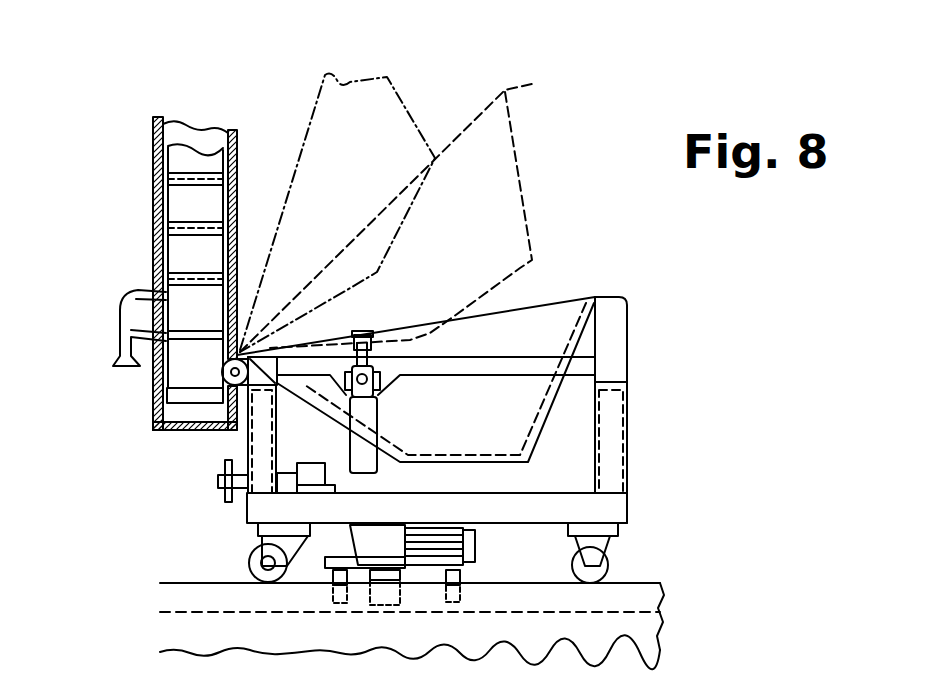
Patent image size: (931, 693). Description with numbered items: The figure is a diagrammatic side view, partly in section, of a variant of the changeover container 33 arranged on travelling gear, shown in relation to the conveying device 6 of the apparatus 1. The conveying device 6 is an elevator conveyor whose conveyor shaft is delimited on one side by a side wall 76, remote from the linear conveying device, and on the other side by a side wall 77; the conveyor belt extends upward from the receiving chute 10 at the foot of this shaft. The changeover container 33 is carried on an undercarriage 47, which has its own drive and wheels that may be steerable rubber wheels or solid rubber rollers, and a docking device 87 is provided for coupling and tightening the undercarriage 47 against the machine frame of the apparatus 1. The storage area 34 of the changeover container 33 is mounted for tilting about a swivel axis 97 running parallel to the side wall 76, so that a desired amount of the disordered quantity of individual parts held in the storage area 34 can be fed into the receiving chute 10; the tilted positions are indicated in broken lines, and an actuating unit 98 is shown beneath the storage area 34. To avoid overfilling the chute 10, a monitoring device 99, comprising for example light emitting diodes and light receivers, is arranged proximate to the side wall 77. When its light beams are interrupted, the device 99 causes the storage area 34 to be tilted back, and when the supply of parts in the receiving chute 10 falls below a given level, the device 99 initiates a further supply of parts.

The apparatus 1 is at (124, 121).
The conveying device 6 is at (223, 116).
The receiving chute 10 is at (194, 329).
The monitoring device 99 is at (128, 312).
The swivel axis 97 is at (224, 373).
The side wall 77 is at (151, 408).
The side wall 76 is at (216, 417).
The docking device 87 is at (212, 511).
The storage area 34 is at (560, 293).
The changeover container 33 is at (650, 349).
The hydraulic cylinder 98 is at (364, 462).
The undercarriage 47 is at (610, 510).